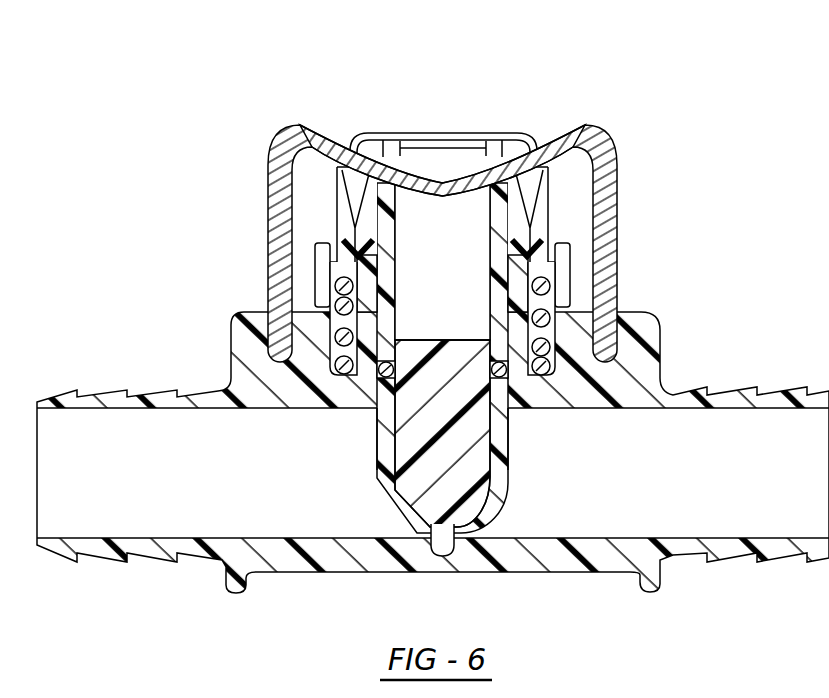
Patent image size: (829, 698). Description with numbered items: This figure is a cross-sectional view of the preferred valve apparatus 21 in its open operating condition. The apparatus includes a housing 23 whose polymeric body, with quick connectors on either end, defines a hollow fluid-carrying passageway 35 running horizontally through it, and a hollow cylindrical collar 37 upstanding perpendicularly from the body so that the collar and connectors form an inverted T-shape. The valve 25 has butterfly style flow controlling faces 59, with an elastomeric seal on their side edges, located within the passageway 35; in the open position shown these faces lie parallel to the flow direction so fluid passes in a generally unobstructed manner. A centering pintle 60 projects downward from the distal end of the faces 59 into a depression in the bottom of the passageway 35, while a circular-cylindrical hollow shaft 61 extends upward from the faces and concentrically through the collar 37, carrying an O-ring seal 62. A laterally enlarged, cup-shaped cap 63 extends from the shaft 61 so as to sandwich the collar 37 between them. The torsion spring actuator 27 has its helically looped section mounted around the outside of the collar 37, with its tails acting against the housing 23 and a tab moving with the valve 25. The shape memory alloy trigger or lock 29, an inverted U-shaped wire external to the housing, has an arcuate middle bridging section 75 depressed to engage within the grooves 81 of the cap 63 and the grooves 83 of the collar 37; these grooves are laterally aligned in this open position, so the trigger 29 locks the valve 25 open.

The valve apparatus 21 is at (433, 333).
The housing 23 is at (607, 570).
The valve 25 is at (373, 460).
The torsion spring actuator 27 is at (534, 348).
The shape memory alloy trigger or lock 29 is at (499, 215).
The passageway 35 is at (148, 478).
The collar 37 is at (442, 261).
The flow controlling faces 59 is at (440, 409).
The centering pintle 60 is at (444, 548).
The shaft 61 is at (442, 407).
The O-ring seal 62 is at (384, 370).
The cap 63 is at (540, 207).
The middle bridging section 75 is at (441, 180).
The grooves 81 is at (510, 145).
The grooves 83 is at (540, 188).